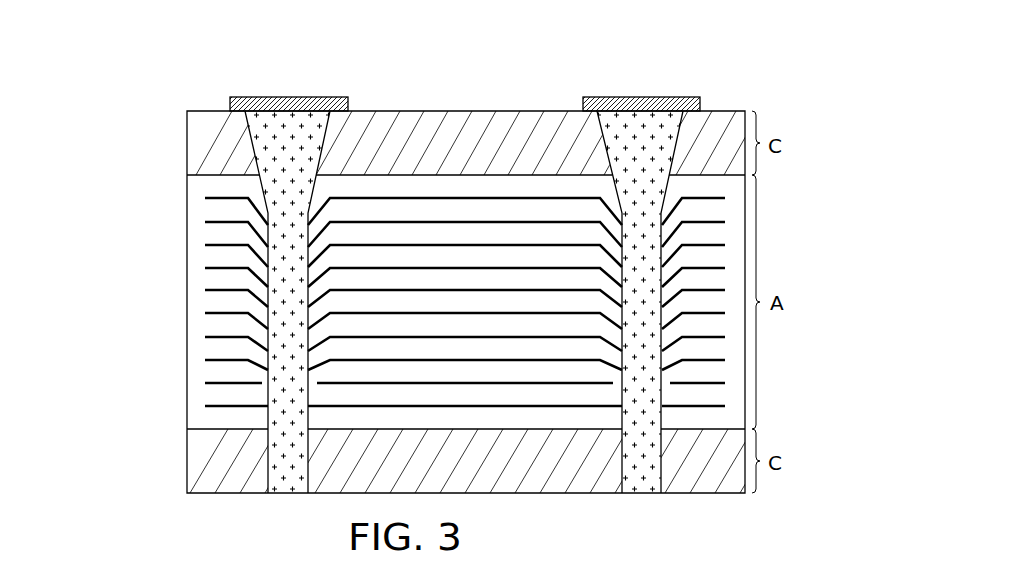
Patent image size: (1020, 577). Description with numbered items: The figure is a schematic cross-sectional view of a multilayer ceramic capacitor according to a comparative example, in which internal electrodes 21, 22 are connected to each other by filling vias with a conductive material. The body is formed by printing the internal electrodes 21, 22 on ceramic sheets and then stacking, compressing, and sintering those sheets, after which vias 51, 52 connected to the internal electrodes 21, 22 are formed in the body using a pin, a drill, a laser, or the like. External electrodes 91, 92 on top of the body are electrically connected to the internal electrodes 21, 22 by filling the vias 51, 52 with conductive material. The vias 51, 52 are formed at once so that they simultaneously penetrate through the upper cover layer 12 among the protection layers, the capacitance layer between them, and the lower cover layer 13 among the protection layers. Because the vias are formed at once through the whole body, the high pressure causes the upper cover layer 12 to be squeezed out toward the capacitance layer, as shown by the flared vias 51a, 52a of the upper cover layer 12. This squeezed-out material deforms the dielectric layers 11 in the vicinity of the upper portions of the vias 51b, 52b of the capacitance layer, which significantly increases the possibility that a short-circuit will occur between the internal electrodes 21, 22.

The dielectric layers 11 is at (220, 351).
The upper cover layer 12 is at (200, 152).
The lower cover layer 13 is at (202, 463).
The internal electrode 21 is at (218, 408).
The internal electrode 22 is at (218, 386).
The via 51 is at (201, 268).
The via of the upper cover layer 51a is at (277, 147).
The via of the capacitance layer 51b is at (264, 200).
The via 52 is at (728, 268).
The via of the upper cover layer 52a is at (655, 147).
The via of the capacitance layer 52b is at (662, 200).
The external electrode 91 is at (286, 97).
The external electrode 92 is at (640, 97).